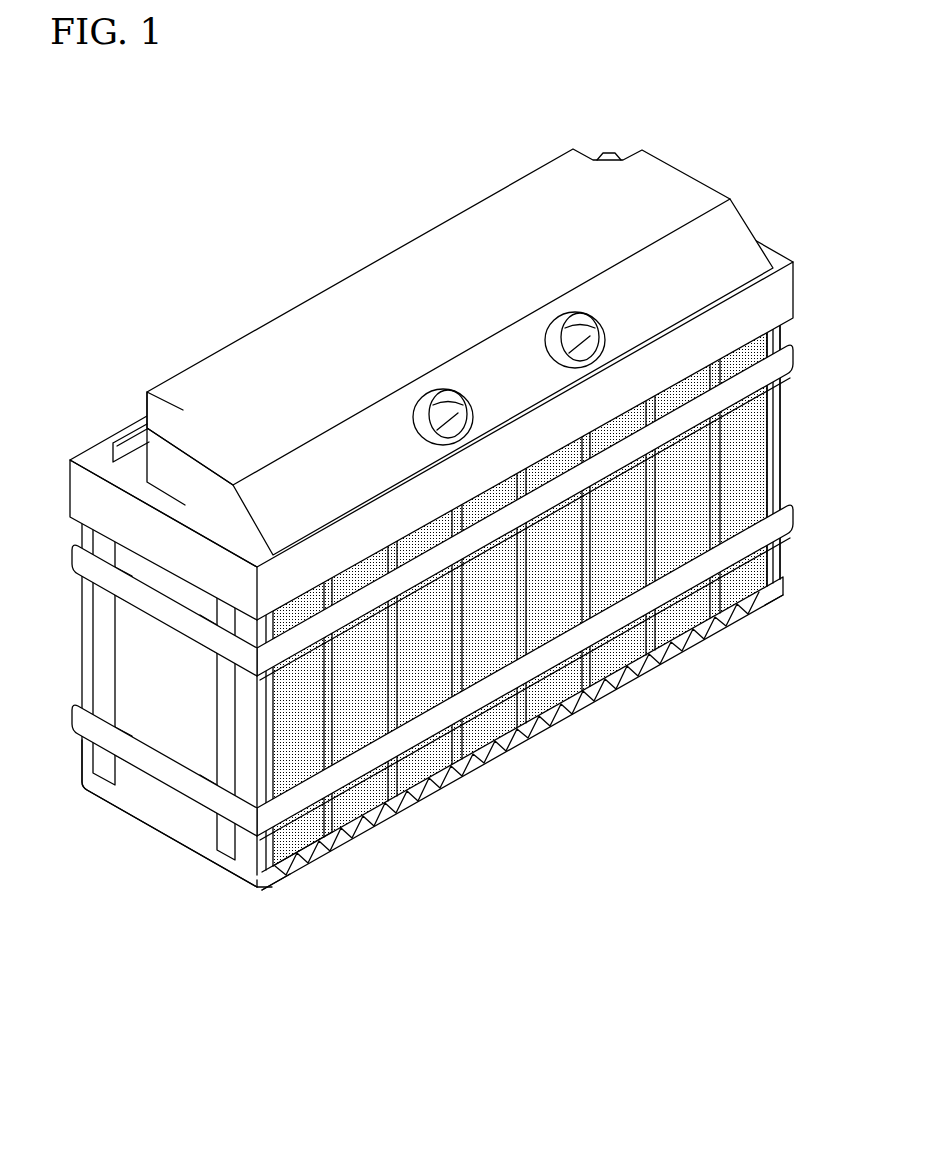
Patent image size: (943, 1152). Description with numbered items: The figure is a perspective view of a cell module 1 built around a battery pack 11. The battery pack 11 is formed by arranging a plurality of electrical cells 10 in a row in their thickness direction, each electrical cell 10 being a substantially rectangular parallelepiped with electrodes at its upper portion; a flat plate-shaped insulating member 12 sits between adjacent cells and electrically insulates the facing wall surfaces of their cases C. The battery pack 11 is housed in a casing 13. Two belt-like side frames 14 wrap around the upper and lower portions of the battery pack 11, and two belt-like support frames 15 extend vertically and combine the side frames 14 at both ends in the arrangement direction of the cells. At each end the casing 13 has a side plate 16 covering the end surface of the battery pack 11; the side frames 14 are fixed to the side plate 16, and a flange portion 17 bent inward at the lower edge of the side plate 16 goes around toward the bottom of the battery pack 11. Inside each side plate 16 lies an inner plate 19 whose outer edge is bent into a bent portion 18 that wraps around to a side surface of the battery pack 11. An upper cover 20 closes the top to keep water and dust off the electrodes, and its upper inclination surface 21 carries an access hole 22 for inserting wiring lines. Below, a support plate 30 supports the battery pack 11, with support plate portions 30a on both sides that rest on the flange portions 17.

The cell module 1 is at (336, 170).
The electrical cell 10 is at (350, 803).
The battery pack 11 is at (550, 638).
The insulating member 12 is at (322, 817).
The casing 13 is at (152, 740).
The side frame 14 is at (787, 363).
The support frame 15 is at (103, 682).
The side plate 16 is at (160, 823).
The flange portion 17 is at (261, 893).
The bent portion 18 is at (550, 638).
The inner plate 19 is at (805, 455).
The upper cover 20 is at (668, 178).
The upper inclination surface 21 is at (733, 232).
The access hole 22 is at (449, 398).
The support plate 30 is at (626, 688).
The support plate portion 30a is at (778, 602).
The case C is at (315, 845).